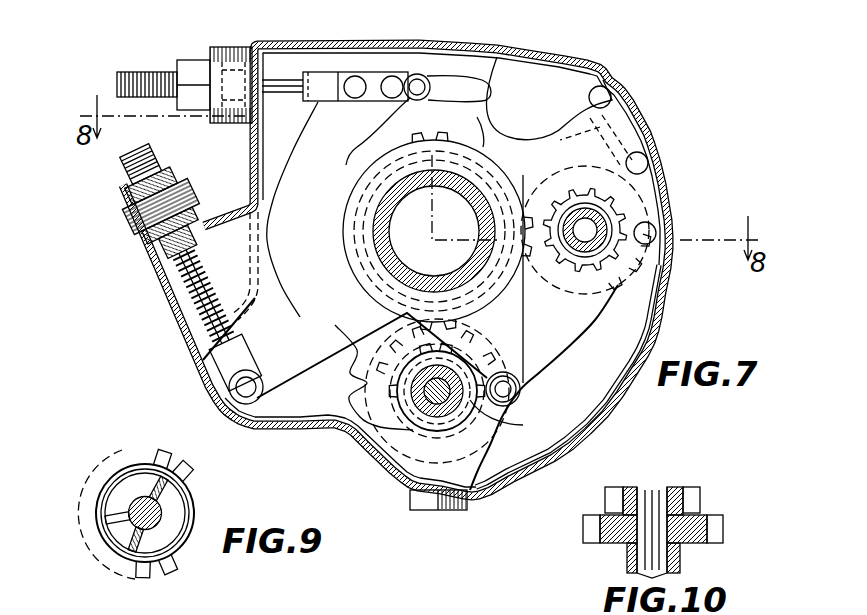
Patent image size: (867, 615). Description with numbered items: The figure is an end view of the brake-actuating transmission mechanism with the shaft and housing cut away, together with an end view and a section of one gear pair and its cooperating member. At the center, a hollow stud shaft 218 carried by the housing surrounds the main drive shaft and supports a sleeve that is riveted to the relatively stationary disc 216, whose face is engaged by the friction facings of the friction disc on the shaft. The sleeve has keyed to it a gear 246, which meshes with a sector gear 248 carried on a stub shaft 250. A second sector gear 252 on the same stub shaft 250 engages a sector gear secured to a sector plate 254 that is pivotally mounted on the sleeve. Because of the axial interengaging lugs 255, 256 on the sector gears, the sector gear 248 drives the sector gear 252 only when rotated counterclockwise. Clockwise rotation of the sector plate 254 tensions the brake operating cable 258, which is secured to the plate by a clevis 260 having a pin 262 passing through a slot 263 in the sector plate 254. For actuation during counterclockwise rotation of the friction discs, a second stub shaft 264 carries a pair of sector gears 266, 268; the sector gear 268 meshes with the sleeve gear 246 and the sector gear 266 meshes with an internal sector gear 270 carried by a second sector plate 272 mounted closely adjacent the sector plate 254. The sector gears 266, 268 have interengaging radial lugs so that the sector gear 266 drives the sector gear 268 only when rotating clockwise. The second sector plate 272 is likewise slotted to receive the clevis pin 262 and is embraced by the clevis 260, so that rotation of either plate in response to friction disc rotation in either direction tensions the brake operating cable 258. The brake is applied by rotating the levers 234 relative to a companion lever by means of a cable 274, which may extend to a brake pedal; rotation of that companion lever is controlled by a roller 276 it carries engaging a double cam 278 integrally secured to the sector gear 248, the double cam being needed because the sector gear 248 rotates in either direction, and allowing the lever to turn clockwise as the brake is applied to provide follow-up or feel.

In FIG. 7, the relatively stationary disc 216 is at (287, 163).
In FIG. 7, the hollow stud shaft 218 is at (395, 203).
In FIG. 7, the levers 234 is at (295, 368).
In FIG. 7, the gear 246 is at (345, 215).
In FIG. 7, the sector gear 248 is at (363, 428).
In FIG. 7, the stub shaft 250 is at (437, 400).
In FIG. 9, the stub shaft 250 is at (130, 513).
In FIG. 7, the second sector gear 252 is at (462, 448).
In FIG. 9, the second sector gear 252 is at (175, 568).
In FIG. 7, the sector plate 254 is at (430, 182).
In FIG. 9, the axial interengaging lug 255 is at (123, 514).
In FIG. 9, the axial interengaging lug 256 is at (152, 485).
In FIG. 7, the brake operating cable 258 is at (287, 80).
In FIG. 7, the clevis 260 is at (373, 83).
In FIG. 7, the pin 262 is at (481, 90).
In FIG. 7, the slot 263 is at (517, 78).
In FIG. 7, the second stub shaft 264 is at (603, 223).
In FIG. 10, the second stub shaft 264 is at (653, 507).
In FIG. 7, the sector gear 266 is at (650, 222).
In FIG. 10, the sector gear 266 is at (700, 497).
In FIG. 7, the sector gear 268 is at (630, 270).
In FIG. 10, the sector gear 268 is at (710, 533).
In FIG. 7, the internal sector gear 270 is at (652, 122).
In FIG. 7, the second sector plate 272 is at (563, 113).
In FIG. 7, the cable 274 is at (180, 272).
In FIG. 7, the roller 276 is at (574, 422).
In FIG. 7, the double cam 278 is at (493, 455).